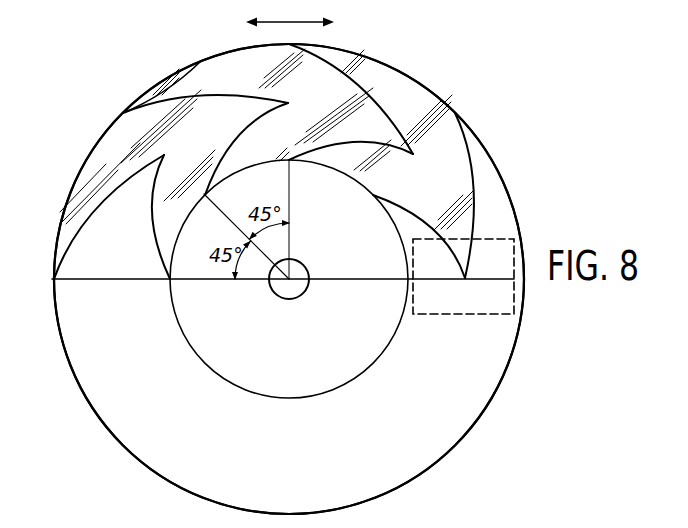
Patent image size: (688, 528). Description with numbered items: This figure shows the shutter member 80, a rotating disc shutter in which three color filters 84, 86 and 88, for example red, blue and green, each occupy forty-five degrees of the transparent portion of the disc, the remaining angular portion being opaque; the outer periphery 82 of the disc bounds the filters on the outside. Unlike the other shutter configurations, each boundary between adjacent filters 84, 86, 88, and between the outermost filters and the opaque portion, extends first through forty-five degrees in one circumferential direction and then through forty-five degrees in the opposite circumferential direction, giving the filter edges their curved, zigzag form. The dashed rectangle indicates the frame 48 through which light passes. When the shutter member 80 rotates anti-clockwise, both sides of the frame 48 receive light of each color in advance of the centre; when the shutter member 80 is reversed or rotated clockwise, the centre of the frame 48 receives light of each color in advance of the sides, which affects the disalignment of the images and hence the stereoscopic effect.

The shutter member 80 is at (147, 437).
The rim 82 is at (432, 448).
The filter 84 is at (113, 140).
The filter 86 is at (203, 70).
The filter 88 is at (410, 90).
The frame 48 is at (513, 310).